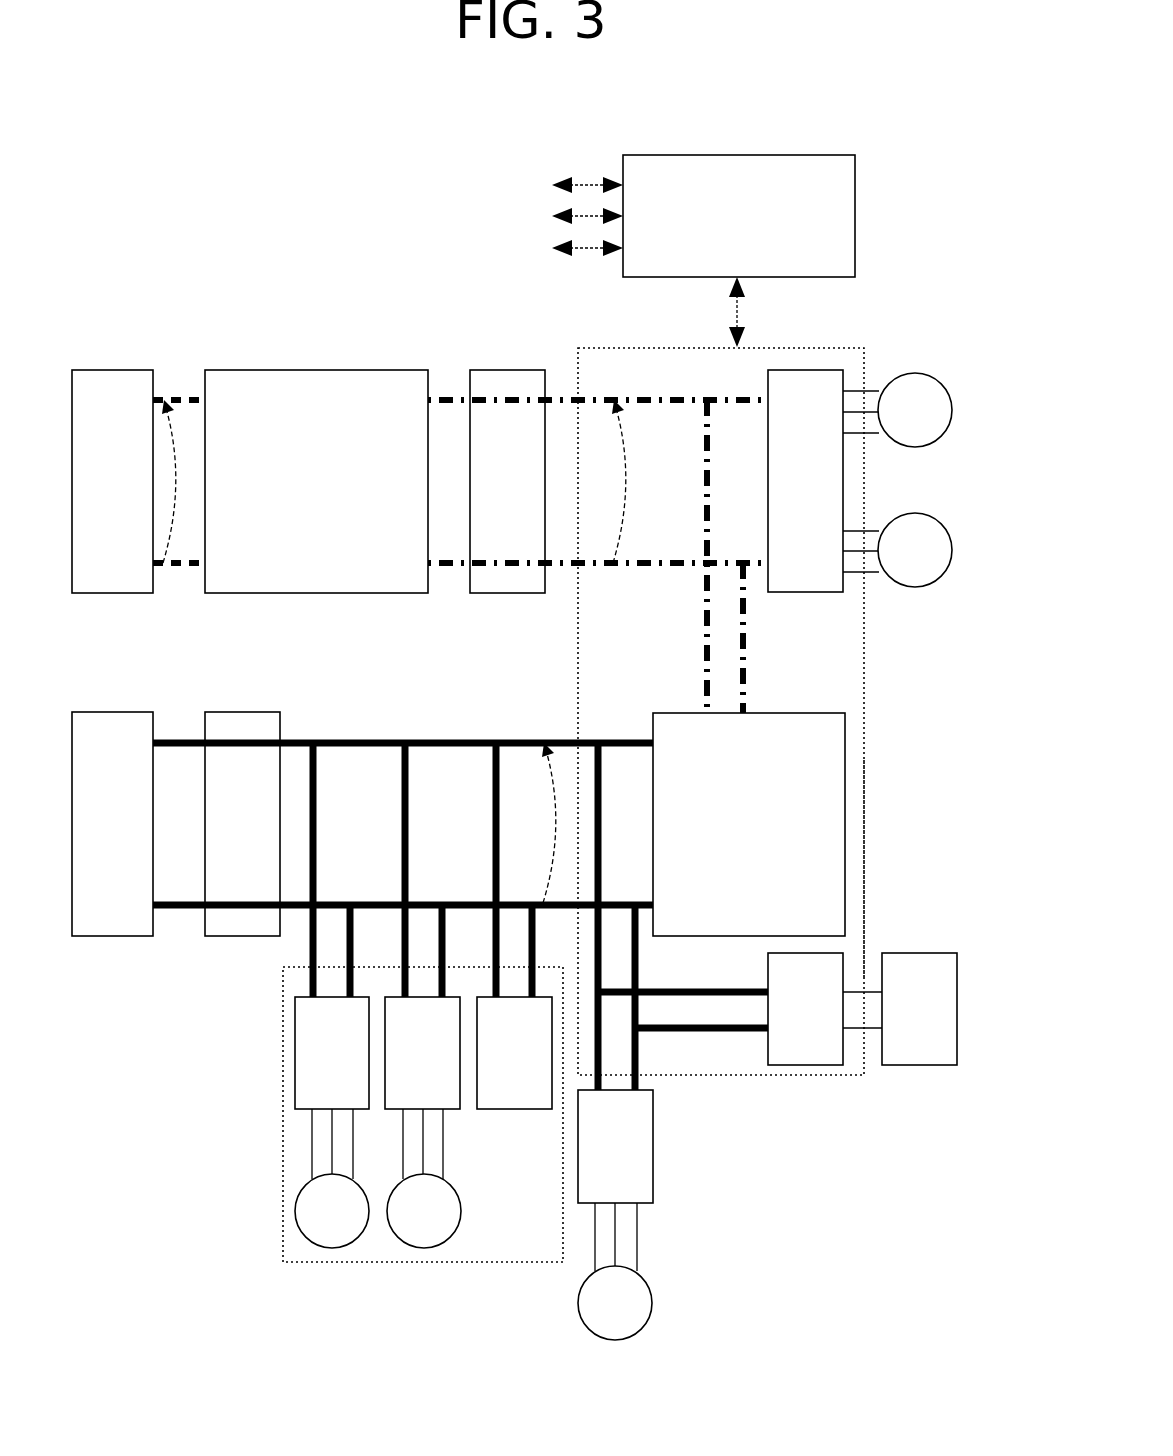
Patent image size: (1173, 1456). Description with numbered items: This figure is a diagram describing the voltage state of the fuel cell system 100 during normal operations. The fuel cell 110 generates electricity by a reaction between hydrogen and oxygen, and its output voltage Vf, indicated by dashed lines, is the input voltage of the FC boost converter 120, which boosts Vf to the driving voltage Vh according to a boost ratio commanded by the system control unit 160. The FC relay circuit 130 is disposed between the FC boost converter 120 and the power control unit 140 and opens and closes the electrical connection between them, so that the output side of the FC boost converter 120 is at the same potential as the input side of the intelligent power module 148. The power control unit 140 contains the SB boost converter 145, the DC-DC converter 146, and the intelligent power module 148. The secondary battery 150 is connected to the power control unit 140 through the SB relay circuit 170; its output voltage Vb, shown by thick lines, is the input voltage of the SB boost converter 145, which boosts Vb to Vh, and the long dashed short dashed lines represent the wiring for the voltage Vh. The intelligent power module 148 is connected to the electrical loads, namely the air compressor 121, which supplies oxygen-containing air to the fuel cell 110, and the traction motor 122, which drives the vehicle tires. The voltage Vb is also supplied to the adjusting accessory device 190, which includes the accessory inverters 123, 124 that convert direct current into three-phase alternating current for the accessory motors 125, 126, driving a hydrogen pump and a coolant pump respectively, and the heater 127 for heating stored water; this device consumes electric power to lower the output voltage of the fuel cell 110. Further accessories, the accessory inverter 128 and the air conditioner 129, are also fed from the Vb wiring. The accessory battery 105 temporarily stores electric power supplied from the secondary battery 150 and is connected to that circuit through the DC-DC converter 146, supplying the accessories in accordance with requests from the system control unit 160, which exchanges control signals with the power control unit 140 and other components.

The fuel cell system 100 is at (120, 158).
The accessory battery 105 is at (915, 1066).
The fuel cell 110 is at (113, 370).
The FC boost converter 120 is at (368, 370).
The air compressor 121 is at (935, 380).
The traction motor 122 is at (935, 520).
The accessory inverter 123 is at (358, 997).
The accessory inverter 124 is at (450, 997).
The accessory motor 125 is at (343, 1250).
The accessory motor 126 is at (435, 1250).
The heater 127 is at (517, 1110).
The accessory inverter 128 is at (653, 1135).
The air conditioner 129 is at (645, 1285).
The FC relay circuit 130 is at (528, 370).
The power control unit 140 is at (842, 348).
The SB boost converter 145 is at (845, 866).
The DC-DC converter 146 is at (800, 1066).
The intelligent power module 148 is at (800, 593).
The secondary battery 150 is at (113, 712).
The system control unit 160 is at (808, 155).
The SB relay circuit 170 is at (263, 712).
The adjusting accessory device 190 is at (494, 1264).